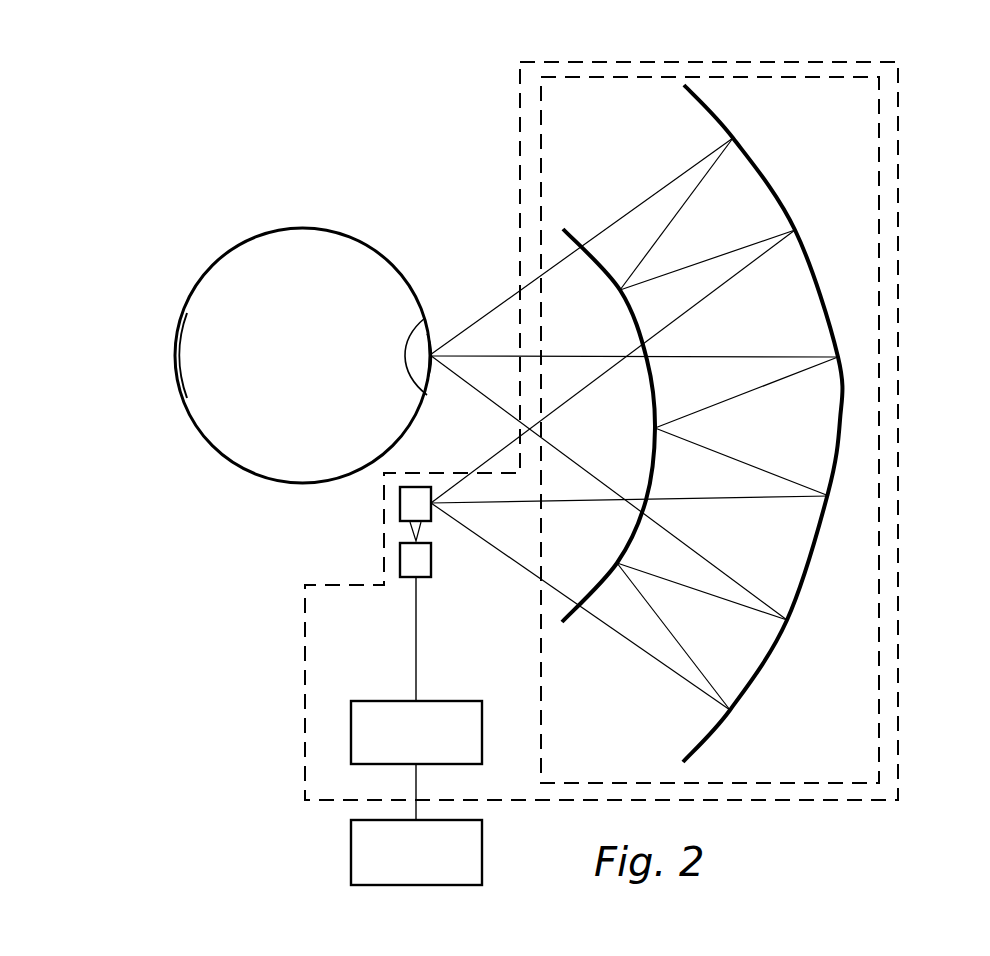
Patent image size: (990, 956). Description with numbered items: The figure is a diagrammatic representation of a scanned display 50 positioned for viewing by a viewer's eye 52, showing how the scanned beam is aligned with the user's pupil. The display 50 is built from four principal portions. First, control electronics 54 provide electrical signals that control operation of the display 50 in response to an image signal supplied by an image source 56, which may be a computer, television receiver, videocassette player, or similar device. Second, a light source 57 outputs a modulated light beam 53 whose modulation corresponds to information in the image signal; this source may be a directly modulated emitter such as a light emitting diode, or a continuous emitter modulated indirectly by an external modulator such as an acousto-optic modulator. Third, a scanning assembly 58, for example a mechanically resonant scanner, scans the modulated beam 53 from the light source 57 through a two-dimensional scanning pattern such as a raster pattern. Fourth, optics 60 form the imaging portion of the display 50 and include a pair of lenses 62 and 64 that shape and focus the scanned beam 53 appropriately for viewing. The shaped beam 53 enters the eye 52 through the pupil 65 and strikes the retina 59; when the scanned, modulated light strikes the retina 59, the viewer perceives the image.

The scanned display 50 is at (899, 318).
The eye 52 is at (288, 227).
The modulated light beam 53 is at (460, 331).
The control electronics 54 is at (483, 716).
The image source 56 is at (483, 862).
The light source 57 is at (432, 566).
The scanning assembly 58 is at (400, 499).
The retina 59 is at (178, 345).
The optics 60 is at (886, 510).
The lens 62 is at (576, 232).
The lens 64 is at (759, 160).
The pupil 65 is at (427, 320).